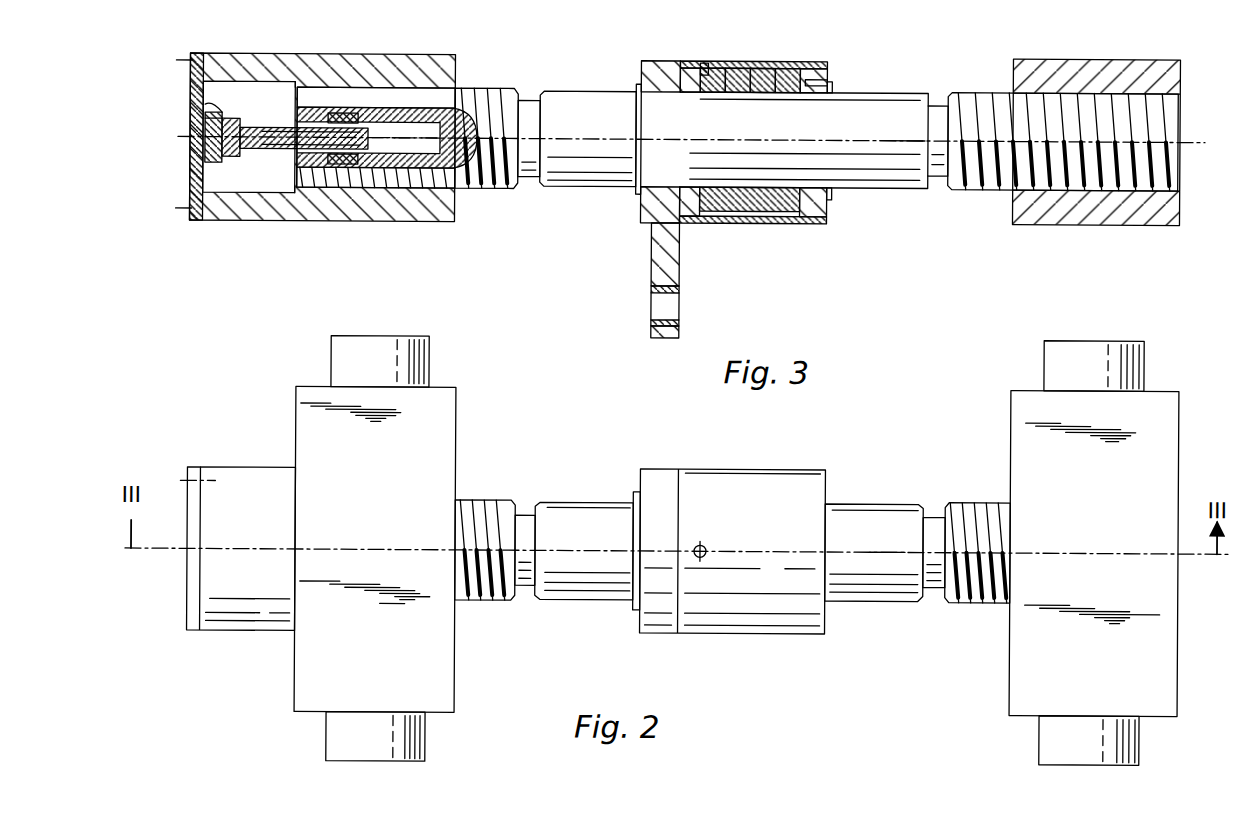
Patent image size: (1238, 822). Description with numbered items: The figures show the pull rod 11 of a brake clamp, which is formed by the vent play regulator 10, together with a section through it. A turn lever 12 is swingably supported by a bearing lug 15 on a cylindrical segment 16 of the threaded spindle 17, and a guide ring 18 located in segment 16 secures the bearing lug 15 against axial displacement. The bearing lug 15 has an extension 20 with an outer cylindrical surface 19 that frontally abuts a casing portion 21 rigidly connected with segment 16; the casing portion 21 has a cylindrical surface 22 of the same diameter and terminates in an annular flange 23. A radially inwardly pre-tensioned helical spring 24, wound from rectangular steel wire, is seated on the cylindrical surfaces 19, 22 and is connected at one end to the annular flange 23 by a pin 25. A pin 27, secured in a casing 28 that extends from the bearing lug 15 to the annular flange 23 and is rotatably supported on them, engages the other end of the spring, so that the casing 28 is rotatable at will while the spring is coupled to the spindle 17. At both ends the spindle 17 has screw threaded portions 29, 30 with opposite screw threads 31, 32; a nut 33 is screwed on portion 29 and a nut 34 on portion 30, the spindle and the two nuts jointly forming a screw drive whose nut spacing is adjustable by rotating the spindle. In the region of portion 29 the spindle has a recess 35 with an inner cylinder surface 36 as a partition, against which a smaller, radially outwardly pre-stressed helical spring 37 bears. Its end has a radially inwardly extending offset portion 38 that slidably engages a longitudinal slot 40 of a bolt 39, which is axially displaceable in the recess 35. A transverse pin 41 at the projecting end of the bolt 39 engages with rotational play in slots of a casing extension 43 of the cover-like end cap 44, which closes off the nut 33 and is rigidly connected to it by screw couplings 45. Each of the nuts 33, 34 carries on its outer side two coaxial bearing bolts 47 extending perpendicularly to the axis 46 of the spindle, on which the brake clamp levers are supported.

In FIG. 3, the vent play regulator 10 is at (791, 305).
In FIG. 2, the vent play regulator 10 is at (760, 687).
In FIG. 3, the pull rod 11 is at (745, 278).
In FIG. 2, the pull rod 11 is at (810, 648).
In FIG. 3, the turn lever 12 is at (652, 328).
In FIG. 3, the bearing lug 15 is at (658, 72).
In FIG. 3, the cylindrical segment 16 is at (568, 98).
In FIG. 2, the cylindrical segment 16 is at (574, 551).
In FIG. 3, the threaded spindle 17 is at (897, 208).
In FIG. 2, the threaded spindle 17 is at (886, 602).
In FIG. 3, the guide ring 18 is at (637, 85).
In FIG. 2, the guide ring 18 is at (637, 551).
In FIG. 3, the outer cylindrical surface 19 is at (712, 192).
In FIG. 3, the extension 20 is at (735, 192).
In FIG. 3, the casing portion 21 is at (768, 192).
In FIG. 3, the cylindrical surface 22 is at (792, 192).
In FIG. 3, the annular flange 23 is at (831, 214).
In FIG. 3, the helical spring 24 is at (756, 214).
In FIG. 3, the pin 25 is at (833, 78).
In FIG. 3, the pin 27 is at (703, 59).
In FIG. 2, the pin 27 is at (703, 542).
In FIG. 3, the casing 28 is at (802, 221).
In FIG. 2, the casing 28 is at (742, 631).
In FIG. 3, the screw threaded portion 29 is at (503, 100).
In FIG. 2, the screw threaded portion 29 is at (483, 600).
In FIG. 3, the screw threaded portion 30 is at (967, 98).
In FIG. 2, the screw threaded portion 30 is at (979, 600).
In FIG. 3, the screw thread 31 is at (488, 190).
In FIG. 3, the screw thread 32 is at (976, 183).
In FIG. 3, the nut 33 is at (426, 214).
In FIG. 2, the nut 33 is at (443, 688).
In FIG. 3, the nut 34 is at (1073, 214).
In FIG. 2, the nut 34 is at (1020, 666).
In FIG. 3, the recess 35 is at (456, 128).
In FIG. 3, the inner cylinder surface 36 is at (312, 195).
In FIG. 3, the helical spring 37 is at (352, 199).
In FIG. 3, the offset portion 38 is at (328, 111).
In FIG. 3, the bolt 39 is at (262, 165).
In FIG. 3, the longitudinal slot 40 is at (256, 116).
In FIG. 3, the transverse pin 41 is at (218, 108).
In FIG. 3, the casing extension 43 is at (205, 113).
In FIG. 3, the end cap 44 is at (190, 168).
In FIG. 2, the end cap 44 is at (190, 607).
In FIG. 3, the screw couplings 45 is at (176, 58).
In FIG. 3, the axis 46 is at (900, 140).
In FIG. 2, the axis 46 is at (880, 545).
In FIG. 2, the bearing bolts 47 is at (334, 354).